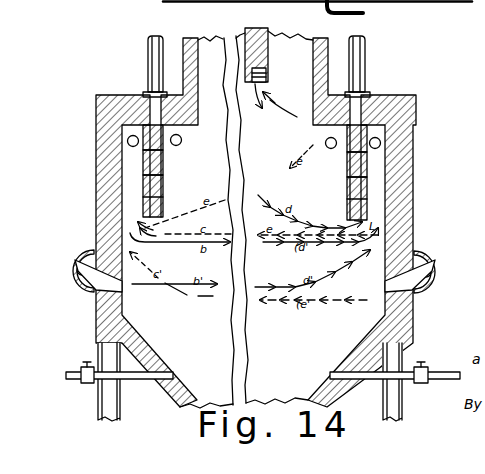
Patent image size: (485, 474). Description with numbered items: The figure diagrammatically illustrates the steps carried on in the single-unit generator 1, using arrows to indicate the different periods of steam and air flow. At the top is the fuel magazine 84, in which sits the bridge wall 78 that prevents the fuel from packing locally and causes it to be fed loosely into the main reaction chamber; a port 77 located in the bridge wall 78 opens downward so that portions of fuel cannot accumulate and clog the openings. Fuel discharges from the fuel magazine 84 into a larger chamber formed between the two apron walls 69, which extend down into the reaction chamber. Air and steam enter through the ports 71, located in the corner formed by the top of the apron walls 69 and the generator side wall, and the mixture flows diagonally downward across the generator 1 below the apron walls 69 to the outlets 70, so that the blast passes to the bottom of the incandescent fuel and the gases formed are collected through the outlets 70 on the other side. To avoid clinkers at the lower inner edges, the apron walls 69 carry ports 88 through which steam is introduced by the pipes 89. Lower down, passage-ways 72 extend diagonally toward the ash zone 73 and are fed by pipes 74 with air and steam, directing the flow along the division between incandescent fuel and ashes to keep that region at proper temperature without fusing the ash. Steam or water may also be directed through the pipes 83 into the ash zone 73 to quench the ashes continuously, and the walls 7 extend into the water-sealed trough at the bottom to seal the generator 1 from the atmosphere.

The generator 1 is at (440, 0).
The walls 7 is at (387, 372).
The apron walls 69 is at (143, 188).
The outlets 70 is at (127, 140).
The ports 71 is at (177, 147).
The passage-ways 72 is at (107, 275).
The ash zone 73 is at (313, 328).
The pipes 74 is at (77, 271).
The port 77 is at (266, 73).
The bridge wall 78 is at (258, 50).
The pipes 83 is at (70, 378).
The fuel magazine 84 is at (302, 77).
The ports 88 is at (150, 167).
The pipes 89 is at (152, 80).